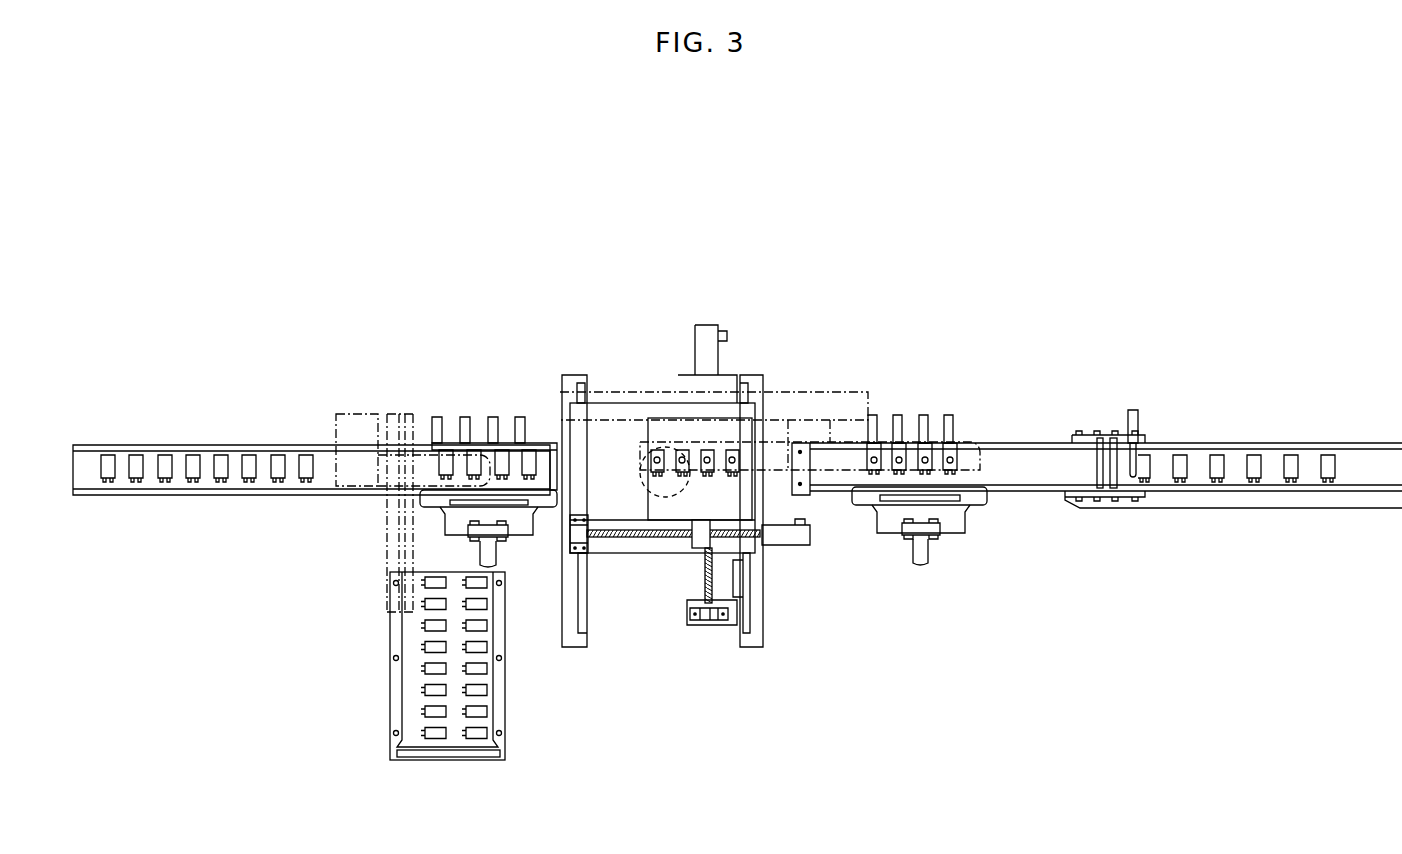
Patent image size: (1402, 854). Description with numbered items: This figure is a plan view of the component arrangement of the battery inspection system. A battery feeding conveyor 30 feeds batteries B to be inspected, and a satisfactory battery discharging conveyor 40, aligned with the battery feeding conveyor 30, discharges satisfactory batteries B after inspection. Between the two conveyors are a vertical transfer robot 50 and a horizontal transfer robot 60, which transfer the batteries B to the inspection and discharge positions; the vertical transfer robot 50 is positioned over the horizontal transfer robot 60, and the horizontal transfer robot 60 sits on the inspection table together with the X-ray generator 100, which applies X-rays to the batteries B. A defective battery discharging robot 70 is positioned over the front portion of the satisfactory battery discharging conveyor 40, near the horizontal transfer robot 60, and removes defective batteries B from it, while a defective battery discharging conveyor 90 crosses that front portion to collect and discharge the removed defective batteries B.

The battery feeding conveyor 30 is at (1269, 448).
The satisfactory battery discharging conveyor 40 is at (158, 462).
The vertical transfer robot 50 is at (803, 392).
The horizontal transfer robot 60 is at (658, 520).
The defective battery discharging robot 70 is at (359, 413).
The defective battery discharging conveyor 90 is at (392, 683).
The X-ray generator 100 is at (642, 471).
The battery B is at (255, 460).